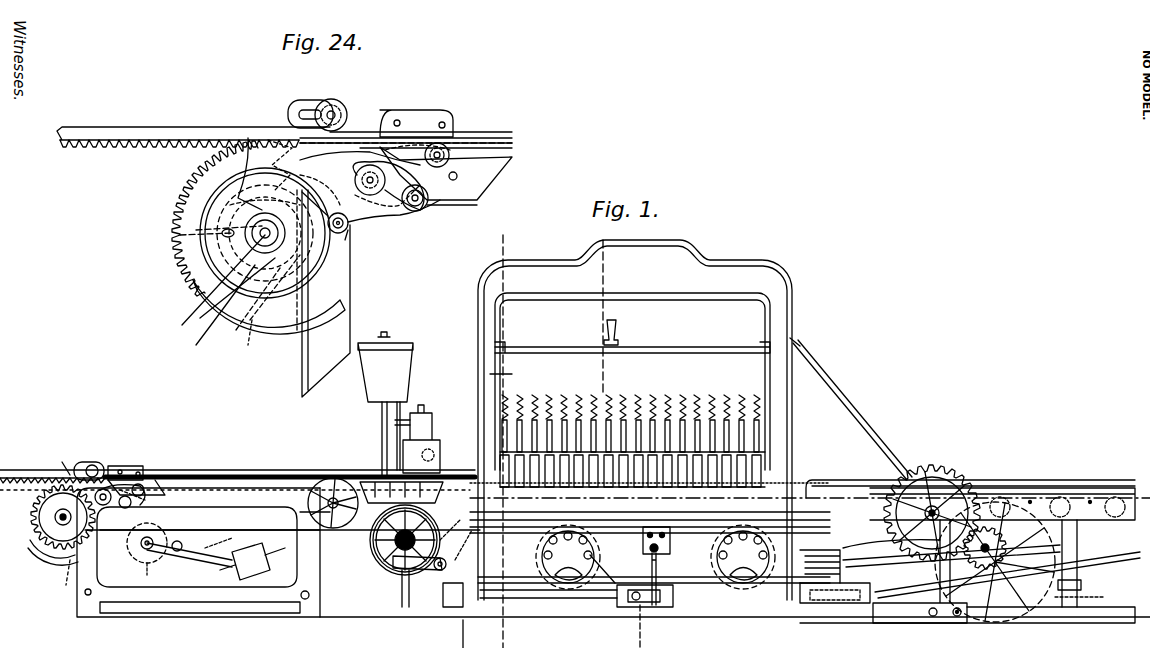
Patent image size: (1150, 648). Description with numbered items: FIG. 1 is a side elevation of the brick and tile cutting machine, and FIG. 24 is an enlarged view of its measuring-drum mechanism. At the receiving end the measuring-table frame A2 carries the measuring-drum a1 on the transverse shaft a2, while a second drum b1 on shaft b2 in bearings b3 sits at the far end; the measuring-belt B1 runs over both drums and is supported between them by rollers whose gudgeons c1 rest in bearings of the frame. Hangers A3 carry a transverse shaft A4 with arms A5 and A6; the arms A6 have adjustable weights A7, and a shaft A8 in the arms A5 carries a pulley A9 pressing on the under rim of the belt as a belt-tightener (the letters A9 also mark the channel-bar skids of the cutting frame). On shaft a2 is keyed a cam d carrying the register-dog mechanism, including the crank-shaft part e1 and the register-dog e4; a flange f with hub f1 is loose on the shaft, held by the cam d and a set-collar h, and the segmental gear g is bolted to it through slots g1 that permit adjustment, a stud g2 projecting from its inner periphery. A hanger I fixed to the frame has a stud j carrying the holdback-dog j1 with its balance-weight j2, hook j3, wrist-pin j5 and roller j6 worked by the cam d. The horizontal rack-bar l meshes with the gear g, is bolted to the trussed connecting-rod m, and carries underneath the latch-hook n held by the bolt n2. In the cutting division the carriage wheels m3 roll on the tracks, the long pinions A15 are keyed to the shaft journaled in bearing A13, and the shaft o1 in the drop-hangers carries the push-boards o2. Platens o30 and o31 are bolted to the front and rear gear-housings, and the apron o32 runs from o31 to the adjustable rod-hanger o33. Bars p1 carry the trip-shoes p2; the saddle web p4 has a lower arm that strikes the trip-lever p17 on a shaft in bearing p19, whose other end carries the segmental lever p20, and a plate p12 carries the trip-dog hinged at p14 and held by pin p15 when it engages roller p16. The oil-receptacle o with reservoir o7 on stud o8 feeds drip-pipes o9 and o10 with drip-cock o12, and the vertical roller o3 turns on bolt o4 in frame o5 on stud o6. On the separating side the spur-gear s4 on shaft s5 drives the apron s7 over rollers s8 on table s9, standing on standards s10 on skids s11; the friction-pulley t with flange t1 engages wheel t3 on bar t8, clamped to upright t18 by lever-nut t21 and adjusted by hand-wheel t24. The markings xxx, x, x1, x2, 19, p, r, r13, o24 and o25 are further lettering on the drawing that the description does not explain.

In FIG. 24, the rack-bar l is at (168, 127).
In FIG. 1, the rack-bar l is at (237, 468).
In FIG. 24, the segmental gear g is at (200, 182).
In FIG. 1, the segmental gear g is at (48, 496).
In FIG. 24, the elongated holes or slots g1 is at (210, 234).
In FIG. 1, the elongated holes or slots g1 is at (40, 517).
In FIG. 24, the stud or projection g2 is at (348, 145).
In FIG. 1, the stud or projection g2 is at (94, 488).
In FIG. 24, the shaft a2 is at (226, 284).
In FIG. 24, the measuring-drum a1 is at (236, 320).
In FIG. 1, the measuring-drum a1 is at (52, 546).
In FIG. 24, the flange f is at (222, 310).
In FIG. 24, the hub f1 is at (265, 248).
In FIG. 24, the set-collar h is at (282, 258).
In FIG. 24, the cam d is at (300, 195).
In FIG. 24, the lever e1 is at (244, 135).
In FIG. 1, the lever e1 is at (68, 461).
In FIG. 24, the register-dog e4 is at (275, 114).
In FIG. 1, the register-dog e4 is at (90, 462).
In FIG. 24, the hanger I is at (312, 108).
In FIG. 1, the hanger I is at (95, 463).
In FIG. 24, the stud j is at (447, 151).
In FIG. 1, the stud j is at (141, 475).
In FIG. 24, the holdback-dog j1 is at (445, 165).
In FIG. 1, the holdback-dog j1 is at (160, 478).
In FIG. 24, the balance-weight portion j2 is at (432, 205).
In FIG. 1, the balance-weight portion j2 is at (130, 507).
In FIG. 1, the hook portion j3 is at (122, 466).
In FIG. 24, the wrist-pin j5 is at (405, 140).
In FIG. 1, the wrist-pin j5 is at (100, 506).
In FIG. 24, the roller j6 is at (352, 236).
In FIG. 1, the roller j6 is at (113, 527).
In FIG. 24, the holdback latch-hook n is at (378, 168).
In FIG. 1, the holdback latch-hook n is at (130, 478).
In FIG. 24, the bolt n2 is at (418, 178).
In FIG. 1, the bolt n2 is at (155, 475).
In FIG. 24, the section line xxx is at (258, 337).
In FIG. 1, the section line xxx is at (67, 575).
In FIG. 1, the frame x2 is at (640, 290).
In FIG. 1, the section line a a is at (609, 309).
In FIG. 1, the bars p1 is at (690, 350).
In FIG. 1, the trip-shoes p2 is at (616, 326).
In FIG. 1, the frame rail x1 is at (803, 448).
In FIG. 1, the type bars o24 is at (660, 398).
In FIG. 1, the springs o25 is at (573, 398).
In FIG. 1, the shaft o1 is at (750, 440).
In FIG. 1, the section line b b is at (836, 506).
In FIG. 1, the support or platen o30 is at (505, 490).
In FIG. 1, the push boards or hangers o2 is at (555, 476).
In FIG. 1, the support or platen o31 is at (762, 498).
In FIG. 1, the journal-bearing A13 is at (540, 556).
In FIG. 1, the pulley A9 is at (762, 614).
In FIG. 1, the plate p12 is at (672, 545).
In FIG. 1, the hinge p14 is at (660, 560).
In FIG. 1, the pin p15 is at (647, 556).
In FIG. 1, the wheels m3 is at (600, 550).
In FIG. 1, the pin x is at (628, 555).
In FIG. 1, the trip-lever p17 is at (672, 600).
In FIG. 1, the roller p16 is at (540, 590).
In FIG. 1, the web p4 is at (608, 586).
In FIG. 1, the bearing p19 is at (643, 620).
In FIG. 1, the section line 19 is at (463, 634).
In FIG. 1, the frame A2 is at (198, 600).
In FIG. 1, the gudgeons or pins c1 is at (290, 520).
In FIG. 1, the arms A5 is at (186, 515).
In FIG. 1, the hangers A3 is at (211, 509).
In FIG. 1, the arms A6 is at (218, 539).
In FIG. 1, the measuring-belt B1 is at (252, 554).
In FIG. 1, the adjustable weights A7 is at (282, 555).
In FIG. 1, the transverse shaft A4 is at (189, 554).
In FIG. 1, the shaft A8 is at (144, 566).
In FIG. 1, the oil-reservoir o7 is at (363, 375).
In FIG. 1, the stud o8 is at (382, 415).
In FIG. 1, the drip-pipe o10 is at (397, 432).
In FIG. 1, the drip-cock o12 is at (422, 412).
In FIG. 1, the bolt o4 is at (432, 420).
In FIG. 1, the drip-pipe o9 is at (456, 423).
In FIG. 1, the vertically-disposed roller o3 is at (456, 436).
In FIG. 1, the supporting-frame o5 is at (459, 446).
In FIG. 1, the stud o6 is at (462, 458).
In FIG. 1, the trussed connecting-rod m is at (390, 476).
In FIG. 1, the oil-receptacle o is at (366, 525).
In FIG. 1, the wheel r13 is at (380, 545).
In FIG. 1, the shaft r is at (349, 560).
In FIG. 1, the drum b1 is at (356, 533).
In FIG. 1, the shaft b2 is at (328, 543).
In FIG. 1, the bearings b3 is at (342, 555).
In FIG. 1, the segmental lever p20 is at (395, 570).
In FIG. 1, the lever p is at (456, 544).
In FIG. 1, the adjustable rod-hanger o33 is at (866, 436).
In FIG. 1, the apron o32 is at (838, 480).
In FIG. 1, the rollers s8 is at (1125, 488).
In FIG. 1, the framework or table s9 is at (1114, 518).
In FIG. 1, the spur-gear s4 is at (914, 468).
In FIG. 1, the friction-pulley t is at (955, 478).
In FIG. 1, the shaft s5 is at (1005, 548).
In FIG. 1, the separating belt or apron s7 is at (1100, 570).
In FIG. 1, the upright t18 is at (1078, 535).
In FIG. 1, the lever-nut t21 is at (1095, 554).
In FIG. 1, the bar t8 is at (882, 590).
In FIG. 1, the clamping-flange t1 is at (880, 542).
In FIG. 1, the hand-wheel t24 is at (1083, 591).
In FIG. 1, the wheel t3 is at (1050, 596).
In FIG. 1, the long pinions A15 is at (818, 550).
In FIG. 1, the standards s10 is at (950, 620).
In FIG. 1, the skids s11 is at (1092, 620).